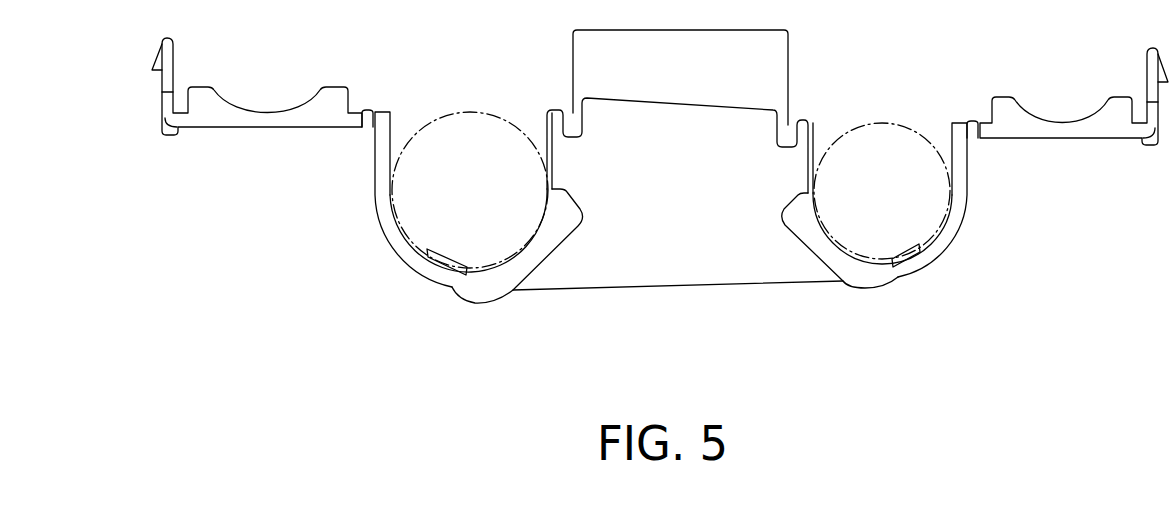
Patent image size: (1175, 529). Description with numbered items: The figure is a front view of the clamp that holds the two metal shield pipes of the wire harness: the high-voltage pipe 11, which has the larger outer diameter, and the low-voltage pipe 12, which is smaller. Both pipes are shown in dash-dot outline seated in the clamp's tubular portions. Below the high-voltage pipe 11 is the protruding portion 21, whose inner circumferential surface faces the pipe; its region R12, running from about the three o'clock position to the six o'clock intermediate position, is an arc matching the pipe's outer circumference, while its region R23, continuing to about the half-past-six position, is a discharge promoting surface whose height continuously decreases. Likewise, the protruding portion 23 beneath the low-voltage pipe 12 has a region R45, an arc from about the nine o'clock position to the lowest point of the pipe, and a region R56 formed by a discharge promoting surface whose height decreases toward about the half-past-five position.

The high-voltage pipe 11 is at (506, 124).
The low-voltage pipe 12 is at (915, 132).
The protruding portion 21 is at (486, 286).
The protruding portion 23 is at (866, 275).
The region between first end portion and intermediate position R12 is at (503, 265).
The region between intermediate position and second end portion R23 is at (465, 257).
The region between first end portion and intermediate position R45 is at (845, 248).
The region between intermediate position and second end portion R56 is at (903, 250).